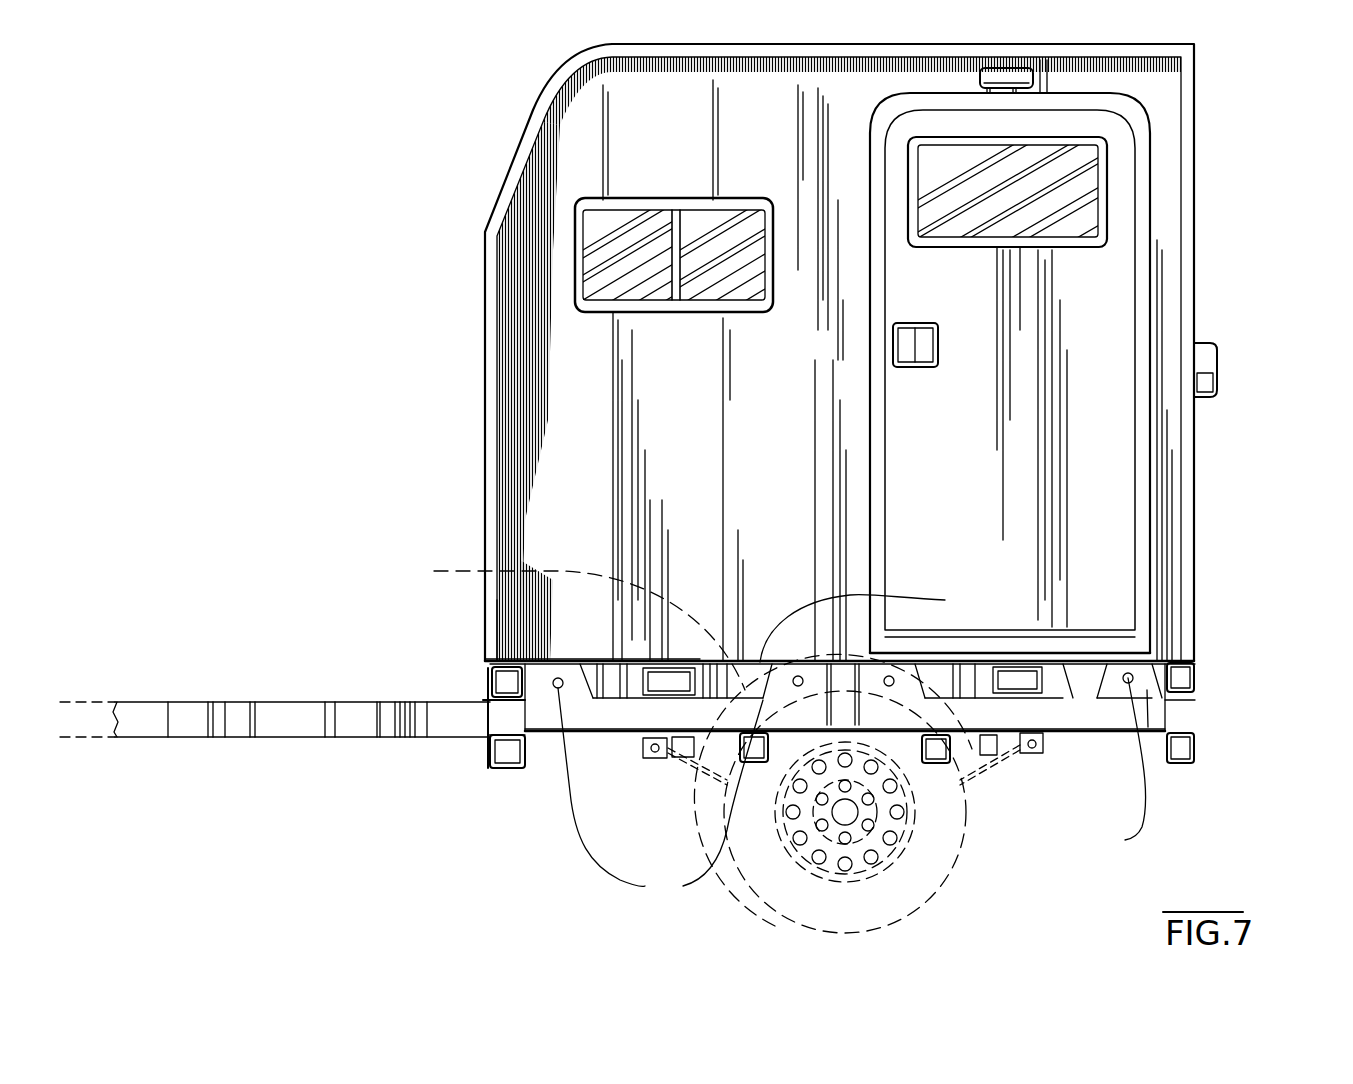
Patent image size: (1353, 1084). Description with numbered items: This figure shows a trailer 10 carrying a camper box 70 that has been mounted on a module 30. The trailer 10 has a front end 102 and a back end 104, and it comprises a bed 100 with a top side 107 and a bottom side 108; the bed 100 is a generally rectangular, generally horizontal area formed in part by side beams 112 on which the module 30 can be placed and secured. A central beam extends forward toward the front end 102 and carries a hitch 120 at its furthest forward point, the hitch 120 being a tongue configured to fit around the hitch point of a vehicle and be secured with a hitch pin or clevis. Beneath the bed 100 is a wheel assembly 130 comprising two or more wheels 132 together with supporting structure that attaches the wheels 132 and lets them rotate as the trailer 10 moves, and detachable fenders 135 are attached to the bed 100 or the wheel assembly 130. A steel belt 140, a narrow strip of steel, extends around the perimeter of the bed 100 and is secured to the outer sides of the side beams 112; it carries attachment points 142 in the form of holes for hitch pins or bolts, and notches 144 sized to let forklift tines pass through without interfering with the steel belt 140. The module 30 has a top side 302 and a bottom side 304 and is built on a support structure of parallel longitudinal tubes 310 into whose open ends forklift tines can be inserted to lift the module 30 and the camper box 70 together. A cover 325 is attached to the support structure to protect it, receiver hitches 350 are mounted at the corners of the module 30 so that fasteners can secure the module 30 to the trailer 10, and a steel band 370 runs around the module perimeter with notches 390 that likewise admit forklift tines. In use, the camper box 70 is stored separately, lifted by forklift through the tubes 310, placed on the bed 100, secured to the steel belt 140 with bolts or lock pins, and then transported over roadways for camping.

The trailer 10 is at (285, 674).
The camper box 70 is at (527, 136).
The hitch 120 is at (150, 710).
The front end 102 is at (457, 723).
The receiver hitch 350 is at (503, 770).
The back end 104 is at (1200, 703).
The bottom side 108 is at (540, 737).
The bed 100 is at (1070, 670).
The top side 107 is at (1195, 675).
The side beam 112 is at (1195, 712).
The steel belt 140 is at (543, 680).
The notch 144 is at (927, 687).
The longitudinal tube 310 is at (637, 730).
The notch 390 is at (670, 672).
The steel band 370 is at (632, 690).
The attachment point 142 is at (852, 791).
The bottom side 304 is at (1148, 727).
The wheel assembly 130 is at (760, 929).
The wheel 132 is at (747, 903).
The fender 135 is at (570, 623).
The module 30 is at (490, 640).
The top side 302 is at (568, 654).
The cover 325 is at (566, 652).